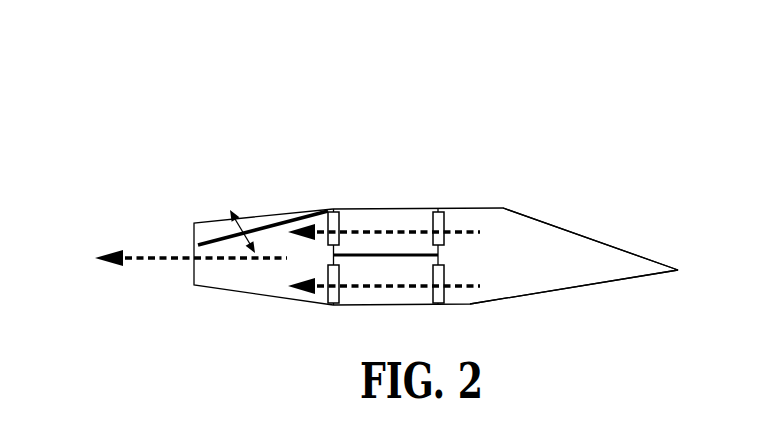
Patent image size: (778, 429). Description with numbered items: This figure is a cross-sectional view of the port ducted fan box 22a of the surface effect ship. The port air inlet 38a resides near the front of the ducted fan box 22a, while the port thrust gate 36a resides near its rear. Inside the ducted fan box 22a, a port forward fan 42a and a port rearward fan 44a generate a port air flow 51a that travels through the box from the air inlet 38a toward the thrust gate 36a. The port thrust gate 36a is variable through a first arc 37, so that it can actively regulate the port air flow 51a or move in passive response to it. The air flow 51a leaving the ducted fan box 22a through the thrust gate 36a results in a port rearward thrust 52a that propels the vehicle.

The port ducted fan box 22a is at (247, 145).
The port thrust gate 36a is at (215, 248).
The first arc 37 is at (230, 229).
The port air inlet 38a is at (603, 250).
The port forward fan 42a is at (443, 210).
The port rearward fan 44a is at (332, 210).
The port air flow 51a is at (373, 230).
The port rearward thrust 52a is at (150, 257).